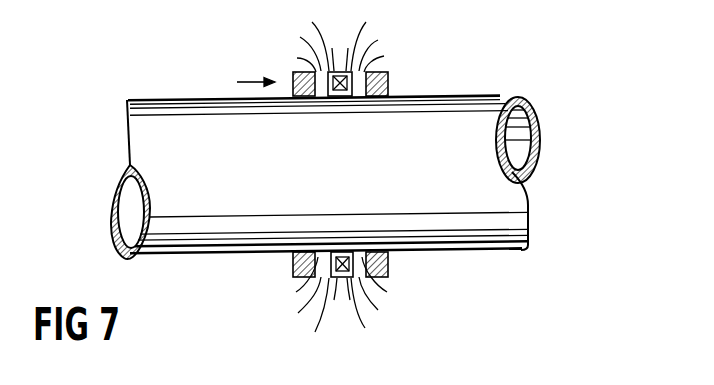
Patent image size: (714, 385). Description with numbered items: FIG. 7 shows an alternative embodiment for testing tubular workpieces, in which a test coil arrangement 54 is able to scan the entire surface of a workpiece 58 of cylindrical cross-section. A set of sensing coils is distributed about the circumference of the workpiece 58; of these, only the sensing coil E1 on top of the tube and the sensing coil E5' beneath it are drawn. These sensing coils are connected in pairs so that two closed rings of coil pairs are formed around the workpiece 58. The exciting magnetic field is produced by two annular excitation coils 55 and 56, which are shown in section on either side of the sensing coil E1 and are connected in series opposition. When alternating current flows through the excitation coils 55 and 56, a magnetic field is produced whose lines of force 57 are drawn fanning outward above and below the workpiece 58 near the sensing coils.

The test coil arrangement 54 is at (238, 83).
The annular excitation coil 55 is at (292, 75).
The annular excitation coil 56 is at (388, 74).
The lines of force 57 is at (365, 23).
The workpiece 58 is at (498, 96).
The sensing coil E1 is at (360, 68).
The sensing coil E5' is at (313, 298).